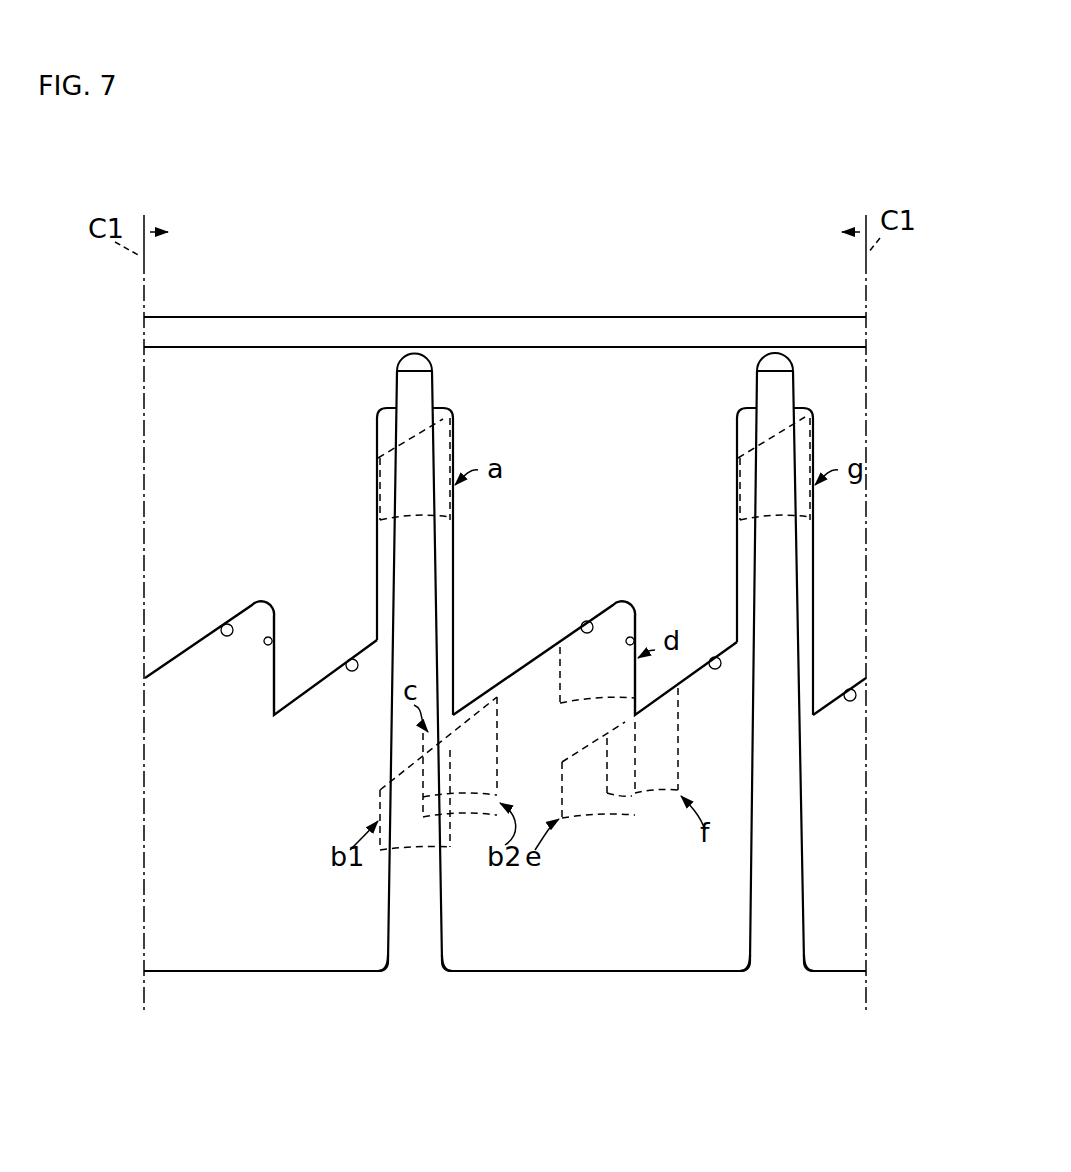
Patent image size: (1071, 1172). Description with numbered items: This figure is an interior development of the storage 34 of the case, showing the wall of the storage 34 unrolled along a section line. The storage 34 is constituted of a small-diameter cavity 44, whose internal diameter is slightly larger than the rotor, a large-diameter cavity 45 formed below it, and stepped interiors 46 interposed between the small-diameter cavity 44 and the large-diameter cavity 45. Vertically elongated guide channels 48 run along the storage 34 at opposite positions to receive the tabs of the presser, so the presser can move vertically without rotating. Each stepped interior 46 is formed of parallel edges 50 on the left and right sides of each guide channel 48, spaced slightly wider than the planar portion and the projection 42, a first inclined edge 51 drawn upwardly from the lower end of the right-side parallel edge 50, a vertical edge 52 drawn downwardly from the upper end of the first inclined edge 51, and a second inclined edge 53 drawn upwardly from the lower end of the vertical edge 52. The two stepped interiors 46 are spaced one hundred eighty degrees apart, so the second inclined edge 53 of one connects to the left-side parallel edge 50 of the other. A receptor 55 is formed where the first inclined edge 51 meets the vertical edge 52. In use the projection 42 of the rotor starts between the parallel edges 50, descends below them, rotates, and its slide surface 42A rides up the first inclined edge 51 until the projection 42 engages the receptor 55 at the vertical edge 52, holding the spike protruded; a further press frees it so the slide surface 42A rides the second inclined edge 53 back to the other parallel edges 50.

The storage 34 is at (581, 381).
The small-diameter cavity 44 is at (222, 365).
The large-diameter cavity 45 is at (205, 960).
The guide channel 48 is at (390, 948).
The parallel edge 50 is at (376, 557).
The receptor 55 is at (254, 604).
The first inclined edge 51 is at (224, 625).
The vertical edge 52 is at (268, 637).
The second inclined edge 53 is at (351, 659).
The stepped interior 46 is at (199, 654).
The projection 42 is at (380, 500).
The slide surface 42A is at (378, 452).